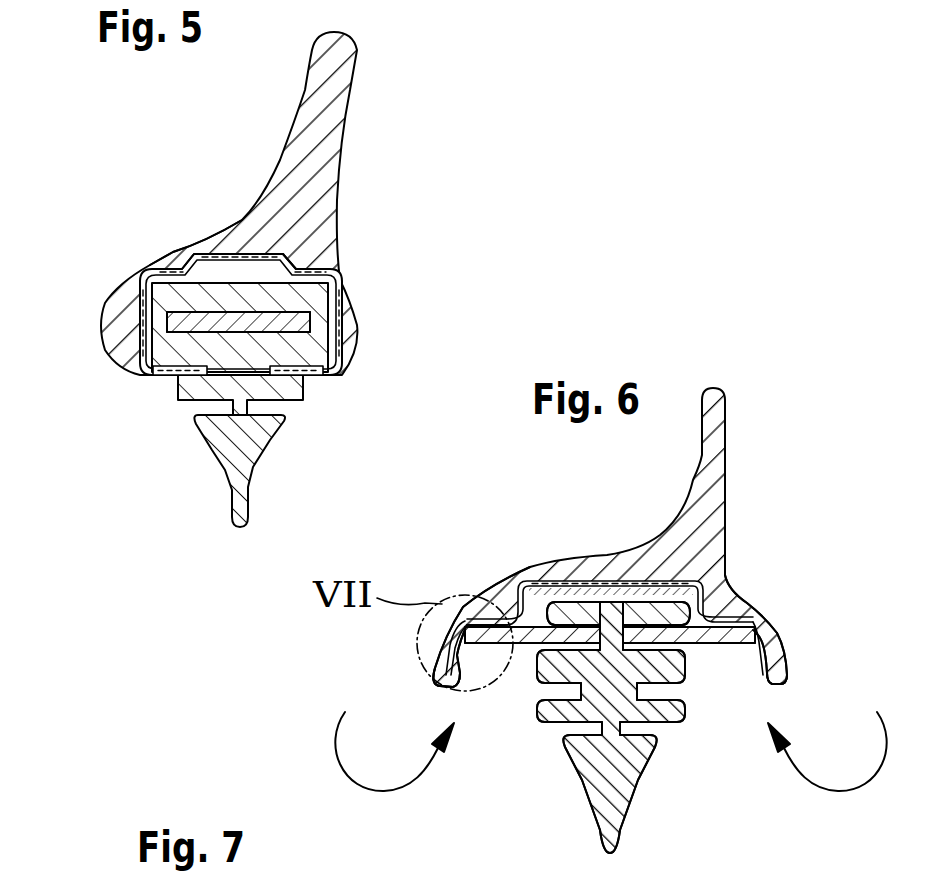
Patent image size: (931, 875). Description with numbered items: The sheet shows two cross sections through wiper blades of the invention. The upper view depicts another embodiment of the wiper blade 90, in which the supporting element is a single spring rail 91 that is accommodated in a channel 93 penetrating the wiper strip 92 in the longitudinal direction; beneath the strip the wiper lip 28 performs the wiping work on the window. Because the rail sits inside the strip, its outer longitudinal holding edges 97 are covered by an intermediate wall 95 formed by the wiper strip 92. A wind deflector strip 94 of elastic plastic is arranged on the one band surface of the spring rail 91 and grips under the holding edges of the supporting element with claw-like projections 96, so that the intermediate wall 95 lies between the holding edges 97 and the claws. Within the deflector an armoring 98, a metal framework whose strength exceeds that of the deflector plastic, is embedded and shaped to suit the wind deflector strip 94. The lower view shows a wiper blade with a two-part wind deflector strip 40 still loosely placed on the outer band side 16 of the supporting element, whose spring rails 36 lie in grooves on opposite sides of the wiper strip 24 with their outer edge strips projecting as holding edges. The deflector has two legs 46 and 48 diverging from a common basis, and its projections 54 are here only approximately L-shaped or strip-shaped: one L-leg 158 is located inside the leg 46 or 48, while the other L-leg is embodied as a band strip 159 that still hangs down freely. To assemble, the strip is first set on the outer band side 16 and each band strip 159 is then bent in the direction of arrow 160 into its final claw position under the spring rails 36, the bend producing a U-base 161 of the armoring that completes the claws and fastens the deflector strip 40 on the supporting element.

In FIG. 5, the wiper blade 90 is at (231, 288).
In FIG. 5, the wiper strip 92 is at (231, 295).
In FIG. 5, the wind deflector strip 94 is at (317, 124).
In FIG. 5, the spring rail 91 is at (177, 247).
In FIG. 5, the armoring 98 is at (300, 250).
In FIG. 5, the holding edges 97 is at (150, 300).
In FIG. 5, the claw-like projections 96 is at (143, 372).
In FIG. 5, the intermediate wall 95 is at (298, 352).
In FIG. 5, the channel 93 is at (200, 398).
In FIG. 5, the wiper lip 28 is at (240, 490).
In FIG. 6, the wind deflector strip 40 is at (747, 452).
In FIG. 6, the U-base 161 is at (723, 543).
In FIG. 6, the leg 48 is at (722, 598).
In FIG. 6, the projections 54 is at (777, 617).
In FIG. 6, the band strip 159 is at (790, 667).
In FIG. 6, the L-leg 158 is at (467, 610).
In FIG. 6, the leg 46 is at (507, 603).
In FIG. 6, the outer band side 16 is at (565, 558).
In FIG. 6, the spring rail 36 is at (715, 640).
In FIG. 6, the wiper strip 24 is at (547, 730).
In FIG. 6, the arrow 160 is at (837, 792).